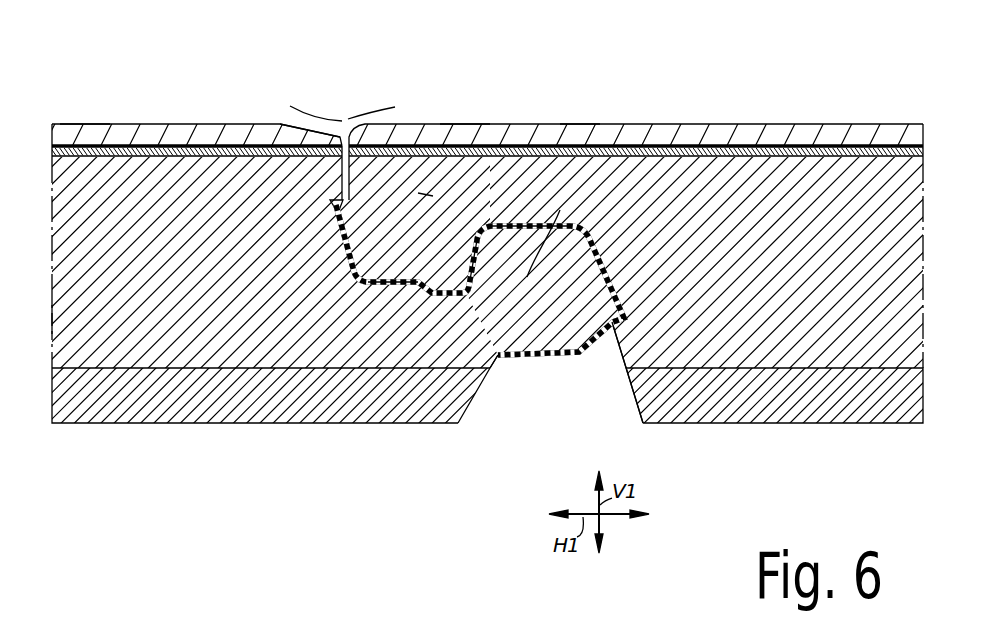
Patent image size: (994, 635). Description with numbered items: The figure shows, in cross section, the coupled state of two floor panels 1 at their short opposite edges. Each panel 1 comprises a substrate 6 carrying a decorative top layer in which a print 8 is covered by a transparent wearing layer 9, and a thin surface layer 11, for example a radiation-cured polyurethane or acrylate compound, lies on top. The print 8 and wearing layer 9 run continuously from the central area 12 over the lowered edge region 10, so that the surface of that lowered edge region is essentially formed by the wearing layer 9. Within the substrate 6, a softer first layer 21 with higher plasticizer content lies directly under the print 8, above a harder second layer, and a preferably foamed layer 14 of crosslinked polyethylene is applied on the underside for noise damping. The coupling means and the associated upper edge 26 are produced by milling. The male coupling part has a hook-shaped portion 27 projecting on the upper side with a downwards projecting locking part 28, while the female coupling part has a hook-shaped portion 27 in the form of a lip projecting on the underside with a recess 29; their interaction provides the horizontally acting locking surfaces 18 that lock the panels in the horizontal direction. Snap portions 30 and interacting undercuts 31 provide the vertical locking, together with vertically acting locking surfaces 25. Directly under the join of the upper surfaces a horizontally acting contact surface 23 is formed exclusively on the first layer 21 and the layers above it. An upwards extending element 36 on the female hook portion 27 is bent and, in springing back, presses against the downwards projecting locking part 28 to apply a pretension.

The panel 1 is at (173, 193).
The substrate 6 is at (233, 340).
The print 8 is at (507, 152).
The transparent wearing layer 9 is at (578, 124).
The lowered edge region 10 is at (320, 108).
The surface layer 11 is at (88, 124).
The central area 12 is at (803, 156).
The foamed layer 14 is at (393, 400).
The horizontally acting locking surface 18 is at (462, 278).
The first layer 21 is at (865, 152).
The horizontally acting contact surface 23 is at (277, 157).
The vertically acting locking surface 25 is at (330, 203).
The upper edge 26 is at (393, 108).
The hook-shaped portion 27 is at (433, 196).
The downwards projecting locking part 28 is at (472, 207).
The recess 29 is at (360, 284).
The snap portion 30 is at (330, 207).
The undercut 31 is at (418, 193).
The upwards extending element 36 is at (547, 227).